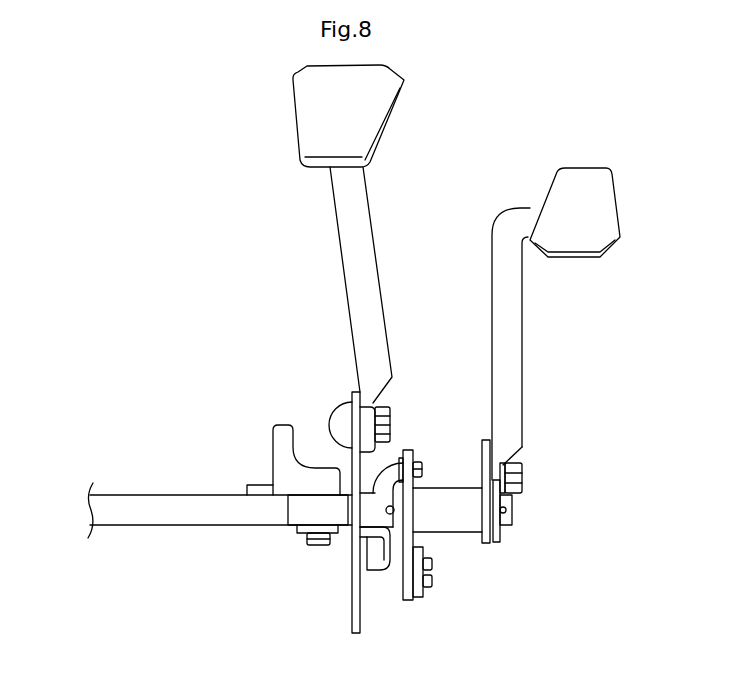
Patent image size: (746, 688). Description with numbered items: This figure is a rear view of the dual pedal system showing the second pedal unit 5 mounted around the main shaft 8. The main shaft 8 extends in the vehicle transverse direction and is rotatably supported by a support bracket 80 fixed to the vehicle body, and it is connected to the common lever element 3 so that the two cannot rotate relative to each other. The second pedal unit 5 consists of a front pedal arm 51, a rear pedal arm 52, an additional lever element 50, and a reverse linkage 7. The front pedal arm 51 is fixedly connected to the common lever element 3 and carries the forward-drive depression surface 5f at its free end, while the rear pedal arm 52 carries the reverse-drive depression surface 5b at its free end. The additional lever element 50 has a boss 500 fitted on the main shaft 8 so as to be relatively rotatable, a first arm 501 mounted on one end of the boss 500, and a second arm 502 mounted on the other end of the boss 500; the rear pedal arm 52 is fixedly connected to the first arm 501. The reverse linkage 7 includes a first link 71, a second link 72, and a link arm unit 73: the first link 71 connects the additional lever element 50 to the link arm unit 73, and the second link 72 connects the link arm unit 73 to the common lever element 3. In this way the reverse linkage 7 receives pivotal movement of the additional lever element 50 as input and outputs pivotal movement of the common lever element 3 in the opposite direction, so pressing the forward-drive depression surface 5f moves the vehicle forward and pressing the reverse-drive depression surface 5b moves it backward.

The second pedal unit 5 is at (514, 104).
The forward-drive depression surface 5f is at (315, 113).
The reverse-drive depression surface 5b is at (585, 213).
The front pedal arm 51 is at (357, 265).
The rear pedal arm 52 is at (508, 337).
The common lever element 3 is at (352, 452).
The main shaft 8 is at (158, 508).
The support bracket 80 is at (312, 507).
The reverse linkage 7 is at (368, 540).
The second link 72 is at (391, 457).
The link arm unit 73 is at (417, 458).
The first link 71 is at (415, 600).
The second arm 502 is at (410, 568).
The boss 500 is at (458, 534).
The first arm 501 is at (487, 440).
The additional lever element 50 is at (476, 560).